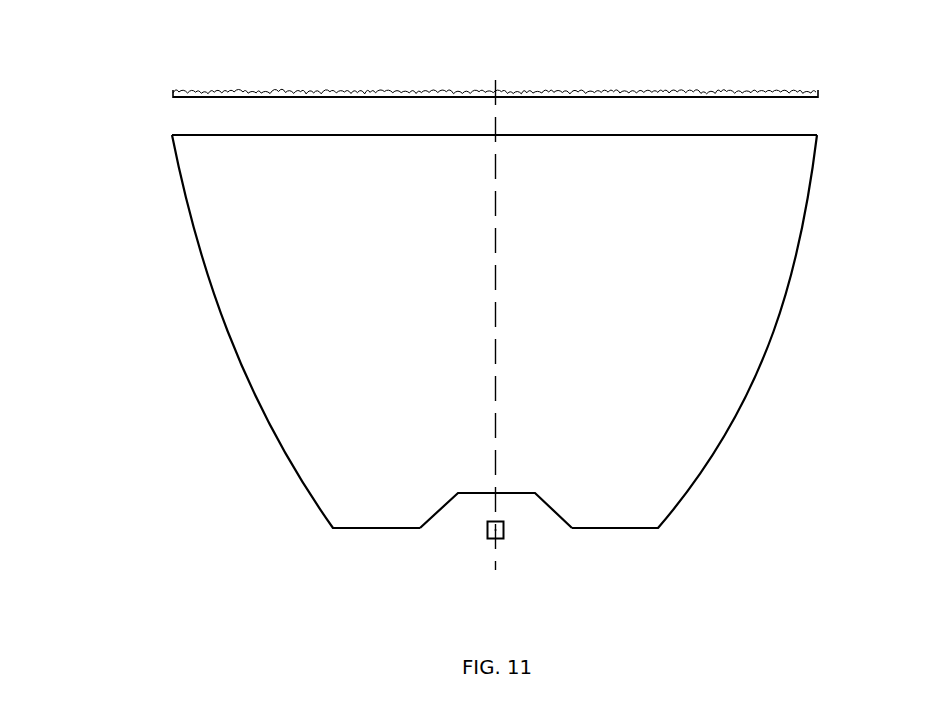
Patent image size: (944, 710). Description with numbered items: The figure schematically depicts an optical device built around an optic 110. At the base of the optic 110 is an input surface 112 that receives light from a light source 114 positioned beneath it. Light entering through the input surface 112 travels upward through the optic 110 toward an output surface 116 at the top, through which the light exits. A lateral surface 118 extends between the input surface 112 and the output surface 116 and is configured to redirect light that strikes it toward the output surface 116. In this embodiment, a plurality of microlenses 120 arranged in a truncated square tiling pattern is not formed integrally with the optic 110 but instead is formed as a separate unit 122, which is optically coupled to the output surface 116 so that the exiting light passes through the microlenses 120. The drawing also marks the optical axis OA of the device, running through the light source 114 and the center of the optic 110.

The optic 110 is at (142, 285).
The input surface 112 is at (516, 492).
The light source 114 is at (505, 537).
The output surface 116 is at (694, 331).
The lateral surface 118 is at (237, 355).
The plurality of microlenses 120 is at (258, 92).
The separate unit 122 is at (840, 95).
The optical axis OA is at (496, 67).